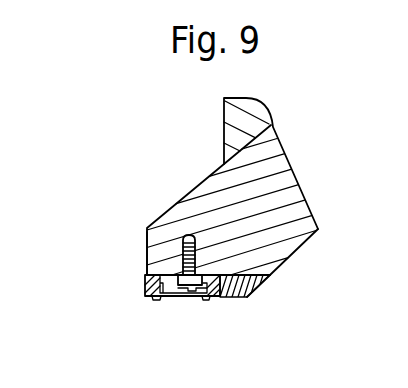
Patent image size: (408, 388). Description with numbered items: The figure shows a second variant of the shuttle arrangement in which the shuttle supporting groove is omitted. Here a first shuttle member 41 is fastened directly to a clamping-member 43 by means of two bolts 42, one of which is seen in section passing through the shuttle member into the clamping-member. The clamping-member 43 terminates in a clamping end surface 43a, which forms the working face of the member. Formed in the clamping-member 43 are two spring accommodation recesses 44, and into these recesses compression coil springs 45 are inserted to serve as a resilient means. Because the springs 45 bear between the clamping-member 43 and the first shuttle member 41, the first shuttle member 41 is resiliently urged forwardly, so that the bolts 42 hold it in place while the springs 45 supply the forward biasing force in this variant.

The first shuttle member 41 is at (155, 297).
The bolt 42 is at (203, 296).
The clamping-member 43 is at (188, 193).
The clamping end surface 43a is at (145, 277).
The spring accommodation recess 44 is at (259, 281).
The compression coil spring 45 is at (243, 300).